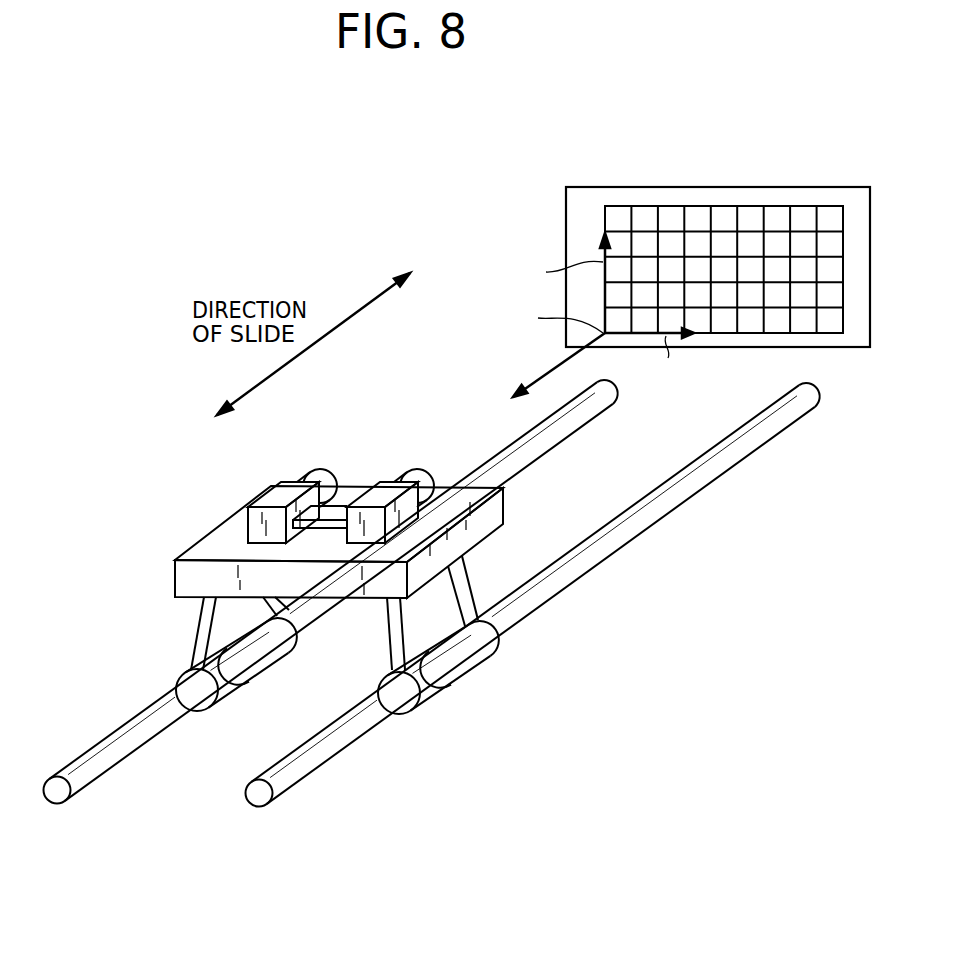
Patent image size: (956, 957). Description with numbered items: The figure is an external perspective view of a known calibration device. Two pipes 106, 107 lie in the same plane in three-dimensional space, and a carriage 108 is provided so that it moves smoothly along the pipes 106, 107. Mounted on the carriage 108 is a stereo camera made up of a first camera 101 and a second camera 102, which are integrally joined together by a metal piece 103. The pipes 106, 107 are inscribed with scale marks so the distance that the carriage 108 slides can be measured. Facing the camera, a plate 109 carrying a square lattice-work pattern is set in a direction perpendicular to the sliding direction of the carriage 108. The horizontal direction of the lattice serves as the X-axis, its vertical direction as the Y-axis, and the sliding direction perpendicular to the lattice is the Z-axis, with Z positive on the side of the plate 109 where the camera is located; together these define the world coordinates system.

The first camera 101 is at (323, 468).
The second camera 102 is at (417, 468).
The metal piece 103 is at (317, 529).
The pipe 106 is at (117, 763).
The pipe 107 is at (327, 750).
The carriage 108 is at (188, 577).
The plate 109 is at (852, 342).